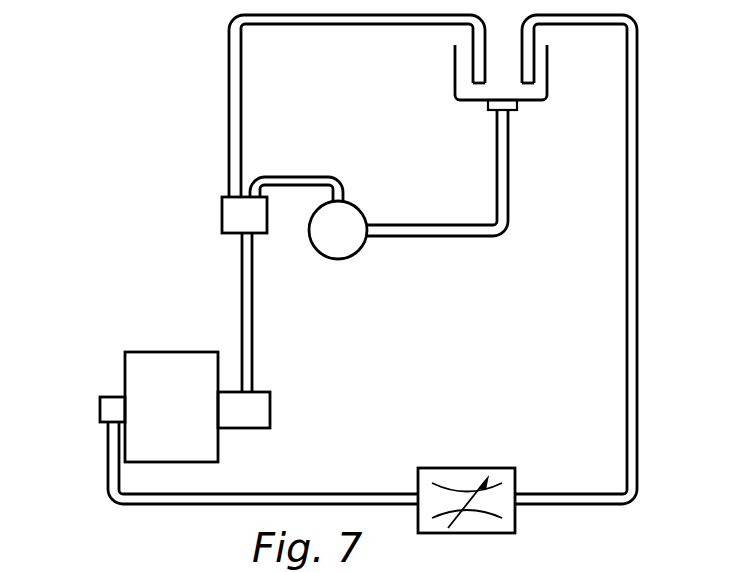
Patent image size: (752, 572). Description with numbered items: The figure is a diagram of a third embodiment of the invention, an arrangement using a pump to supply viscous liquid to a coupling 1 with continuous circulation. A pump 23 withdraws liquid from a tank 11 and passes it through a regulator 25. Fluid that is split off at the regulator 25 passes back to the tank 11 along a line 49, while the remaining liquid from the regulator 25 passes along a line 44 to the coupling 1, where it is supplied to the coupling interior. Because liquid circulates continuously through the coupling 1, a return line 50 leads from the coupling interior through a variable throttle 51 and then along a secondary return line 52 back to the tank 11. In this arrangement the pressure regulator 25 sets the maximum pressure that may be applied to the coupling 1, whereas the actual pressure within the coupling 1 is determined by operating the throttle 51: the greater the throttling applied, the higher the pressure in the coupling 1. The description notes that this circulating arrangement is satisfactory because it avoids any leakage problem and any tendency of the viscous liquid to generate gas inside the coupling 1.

The coupling 1 is at (180, 423).
The tank 11 is at (546, 97).
The pump 23 is at (347, 222).
The regulator 25 is at (222, 228).
The line 44 is at (252, 320).
The line 49 is at (342, 19).
The return line 50 is at (113, 480).
The variable throttle 51 is at (494, 468).
The secondary return line 52 is at (637, 250).